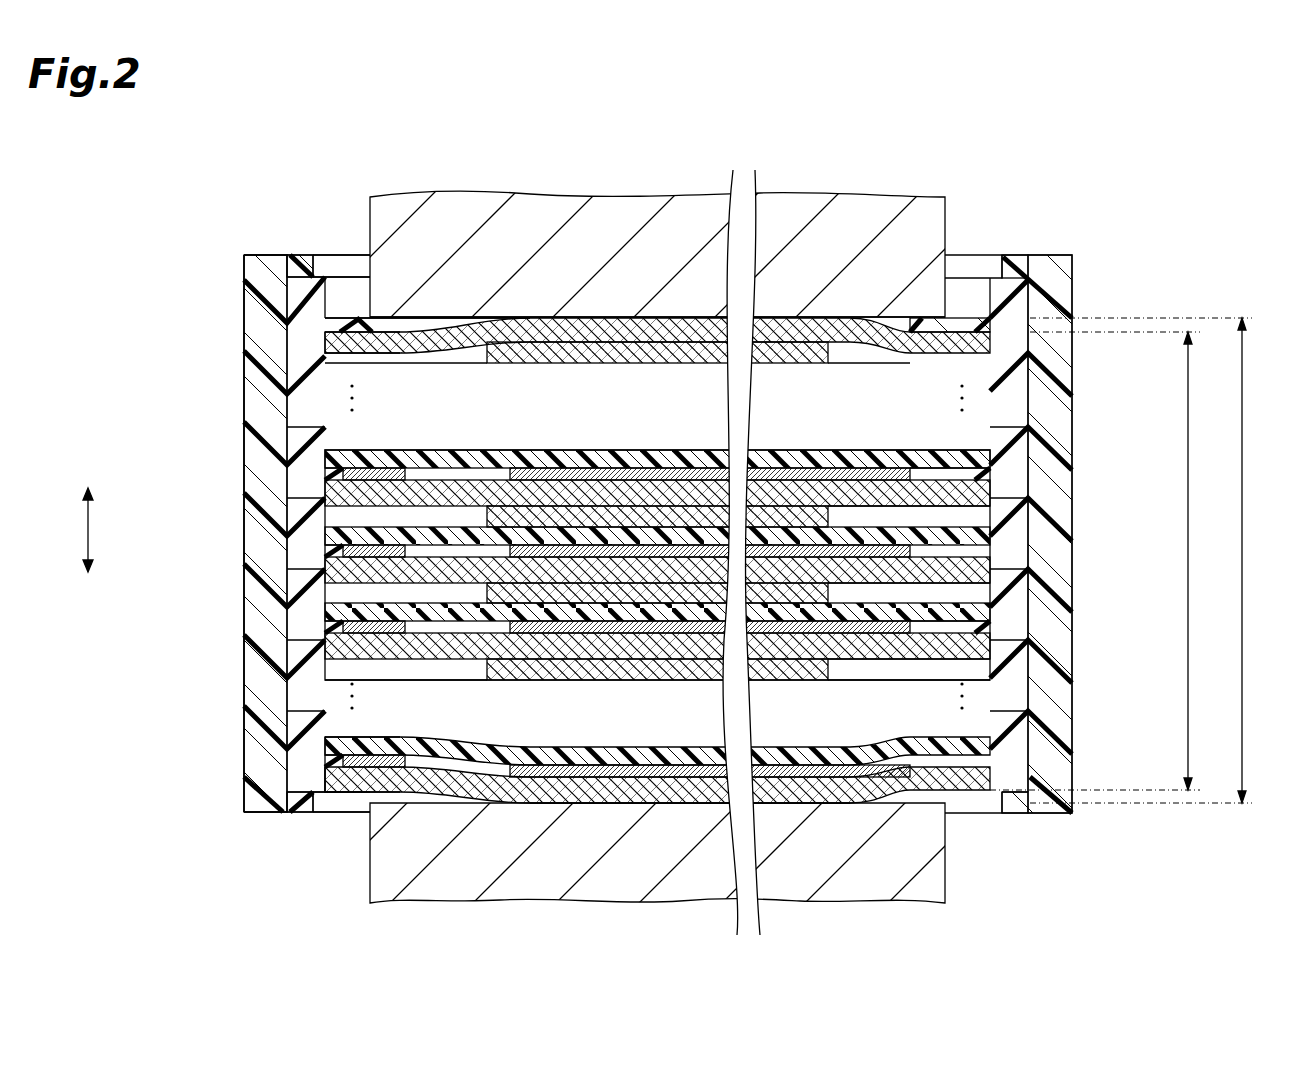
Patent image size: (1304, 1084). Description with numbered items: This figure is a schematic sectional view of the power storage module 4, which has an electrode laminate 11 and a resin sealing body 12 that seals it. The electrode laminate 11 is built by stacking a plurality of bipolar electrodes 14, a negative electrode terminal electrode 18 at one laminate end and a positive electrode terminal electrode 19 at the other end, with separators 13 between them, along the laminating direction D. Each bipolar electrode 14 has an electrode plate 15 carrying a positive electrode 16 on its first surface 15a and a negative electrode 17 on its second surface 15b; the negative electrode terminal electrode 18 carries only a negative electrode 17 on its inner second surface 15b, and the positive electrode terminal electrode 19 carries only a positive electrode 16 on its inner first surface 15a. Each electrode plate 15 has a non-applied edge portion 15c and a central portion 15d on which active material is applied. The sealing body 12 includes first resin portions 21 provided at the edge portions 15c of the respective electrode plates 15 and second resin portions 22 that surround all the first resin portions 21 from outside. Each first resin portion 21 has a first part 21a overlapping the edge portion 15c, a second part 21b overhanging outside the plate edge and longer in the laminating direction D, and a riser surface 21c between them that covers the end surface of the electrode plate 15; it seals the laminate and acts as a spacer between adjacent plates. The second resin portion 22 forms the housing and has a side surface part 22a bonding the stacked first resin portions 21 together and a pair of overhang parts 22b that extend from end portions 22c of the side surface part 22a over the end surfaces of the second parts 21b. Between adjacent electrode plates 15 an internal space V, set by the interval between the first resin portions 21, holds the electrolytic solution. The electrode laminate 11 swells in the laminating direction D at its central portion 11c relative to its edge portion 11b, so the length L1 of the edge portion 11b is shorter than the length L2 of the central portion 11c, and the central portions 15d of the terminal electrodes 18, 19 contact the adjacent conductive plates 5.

The power storage module 4 is at (297, 185).
The conductive plate 5 is at (528, 214).
The electrode laminate 11 is at (846, 310).
The edge portion 11b is at (358, 318).
The central portion 11c is at (632, 315).
The sealing body 12 is at (1075, 266).
The separator 13 is at (958, 440).
The bipolar electrode 14 is at (176, 432).
The electrode plate 15 is at (330, 345).
The first surface 15a is at (968, 478).
The second surface 15b is at (960, 500).
The edge portion 15c is at (972, 470).
The central portion 15d is at (656, 806).
The positive electrode 16 is at (522, 450).
The negative electrode 17 is at (488, 356).
The negative electrode terminal electrode 18 is at (176, 340).
The positive electrode terminal electrode 19 is at (176, 692).
The first resin portion 21 is at (262, 292).
The first part 21a is at (966, 328).
The second part 21b is at (1012, 278).
The riser surface 21c is at (1002, 258).
The second resin portion 22 is at (266, 628).
The side surface part 22a is at (250, 670).
The overhang part 22b is at (313, 274).
The end portion 22c is at (257, 268).
The laminating direction D is at (84, 530).
The internal space V is at (978, 588).
The length of the edge portion L1 is at (1107, 561).
The length of the central portion L2 is at (1154, 560).